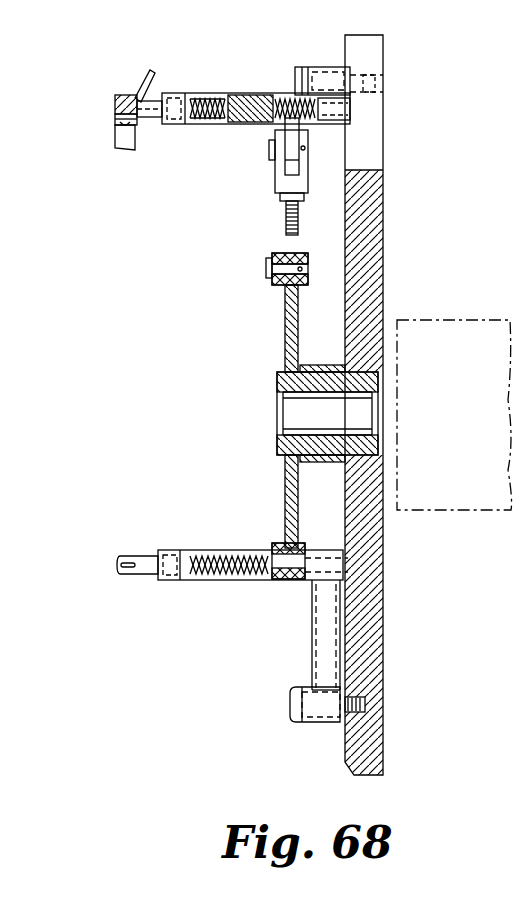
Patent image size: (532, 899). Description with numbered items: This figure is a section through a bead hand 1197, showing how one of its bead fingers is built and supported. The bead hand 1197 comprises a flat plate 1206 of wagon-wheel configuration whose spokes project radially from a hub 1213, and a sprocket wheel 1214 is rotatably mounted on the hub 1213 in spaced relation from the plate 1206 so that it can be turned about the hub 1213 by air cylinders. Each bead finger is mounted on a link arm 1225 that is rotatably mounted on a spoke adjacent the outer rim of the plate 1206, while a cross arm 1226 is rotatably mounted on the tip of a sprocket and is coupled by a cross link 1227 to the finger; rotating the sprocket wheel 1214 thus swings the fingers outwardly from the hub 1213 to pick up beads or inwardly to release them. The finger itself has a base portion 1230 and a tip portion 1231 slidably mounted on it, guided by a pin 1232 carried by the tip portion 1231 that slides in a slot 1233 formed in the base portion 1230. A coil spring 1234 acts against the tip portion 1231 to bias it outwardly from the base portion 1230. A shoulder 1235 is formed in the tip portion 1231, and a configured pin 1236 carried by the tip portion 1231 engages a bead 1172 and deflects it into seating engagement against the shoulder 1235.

The bead 1172 is at (117, 95).
The bead hand 1197 is at (388, 257).
The flat plate 1206 is at (383, 604).
The hub 1213 is at (278, 440).
The sprocket wheel 1214 is at (285, 320).
The link arm 1225 is at (305, 66).
The cross arm 1226 is at (286, 220).
The cross link 1227 is at (306, 127).
The base portion 1230 is at (250, 125).
The tip portion 1231 is at (150, 118).
The pin 1232 is at (186, 125).
The slot 1233 is at (200, 95).
The coil spring 1234 is at (240, 95).
The shoulder 1235 is at (120, 124).
The configured pin 1236 is at (149, 71).